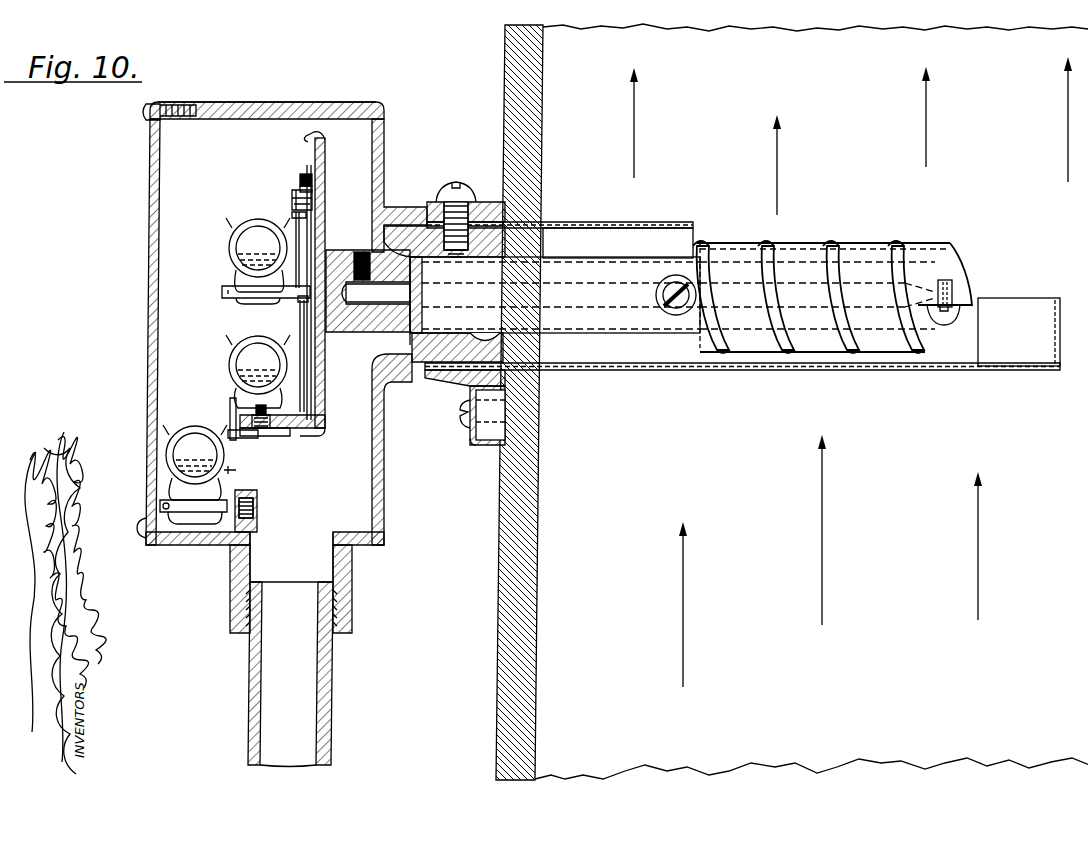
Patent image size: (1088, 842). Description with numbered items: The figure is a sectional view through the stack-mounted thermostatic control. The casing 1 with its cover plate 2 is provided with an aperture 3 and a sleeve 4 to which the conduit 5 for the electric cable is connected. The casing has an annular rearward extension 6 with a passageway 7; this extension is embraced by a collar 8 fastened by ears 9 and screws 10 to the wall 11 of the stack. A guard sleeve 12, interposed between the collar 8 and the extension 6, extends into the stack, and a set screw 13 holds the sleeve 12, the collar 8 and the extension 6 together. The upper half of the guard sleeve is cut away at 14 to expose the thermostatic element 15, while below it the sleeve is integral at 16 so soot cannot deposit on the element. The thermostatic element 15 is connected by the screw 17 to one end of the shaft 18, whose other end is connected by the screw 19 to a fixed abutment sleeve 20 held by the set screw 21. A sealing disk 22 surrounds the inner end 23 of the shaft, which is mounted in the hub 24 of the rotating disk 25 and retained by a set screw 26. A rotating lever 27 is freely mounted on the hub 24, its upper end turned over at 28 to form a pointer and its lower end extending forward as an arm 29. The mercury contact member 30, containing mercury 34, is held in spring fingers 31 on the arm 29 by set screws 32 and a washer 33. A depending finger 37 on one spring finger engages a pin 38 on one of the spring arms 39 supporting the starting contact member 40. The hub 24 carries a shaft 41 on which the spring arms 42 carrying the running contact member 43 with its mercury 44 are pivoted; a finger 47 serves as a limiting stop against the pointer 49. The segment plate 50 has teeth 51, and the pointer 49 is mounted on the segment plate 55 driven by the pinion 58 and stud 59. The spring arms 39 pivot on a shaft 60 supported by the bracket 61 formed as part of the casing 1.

The casing 1 is at (292, 102).
The cover plate 2 is at (150, 325).
The aperture 3 is at (286, 550).
The sleeve 4 is at (352, 598).
The conduit 5 is at (328, 694).
The annular rearward extension 6 is at (412, 374).
The passageway 7 is at (498, 346).
The collar 8 is at (468, 398).
The ears 9 is at (476, 440).
The screws 10 is at (476, 440).
The wall of the stack 11 is at (522, 530).
The guard sleeve 12 is at (566, 372).
The set screw 13 is at (452, 182).
The cut-away portion 14 is at (1013, 298).
The thermostatic element 15 is at (930, 252).
The integral portion 16 is at (890, 372).
The screw 17 is at (958, 322).
The shaft 18 is at (966, 300).
The screw 19 is at (682, 310).
The fixed abutment sleeve 20 is at (612, 325).
The set screw 21 is at (470, 252).
The sealing disk 22 is at (402, 336).
The inner end of the shaft 23 is at (388, 292).
The hub 24 is at (338, 250).
The rotating disk 25 is at (308, 176).
The set screw 26 is at (362, 252).
The rotating lever 27 is at (326, 165).
The turned-over end 28 is at (310, 136).
The arm 29 is at (314, 430).
The mercury contact member 30 is at (256, 340).
The spring fingers 31 is at (236, 364).
The set screws 32 is at (272, 436).
The washer 33 is at (262, 402).
The mercury 34 is at (246, 372).
The depending finger 37 is at (232, 432).
The pin 38 is at (250, 446).
The spring arms 39 is at (228, 472).
The starting contact member 40 is at (196, 434).
The shaft 41 is at (222, 294).
The spring arms 42 is at (232, 250).
The running contact member 43 is at (252, 228).
The mercury 44 is at (250, 258).
The finger 47 is at (294, 216).
The limiting pointer 49 is at (302, 190).
The segment plate 50 is at (300, 392).
The teeth 51 is at (312, 430).
The segment plate 55 is at (300, 326).
The pinion 58 is at (306, 174).
The stud 59 is at (300, 200).
The shaft 60 is at (196, 526).
The bracket 61 is at (258, 520).